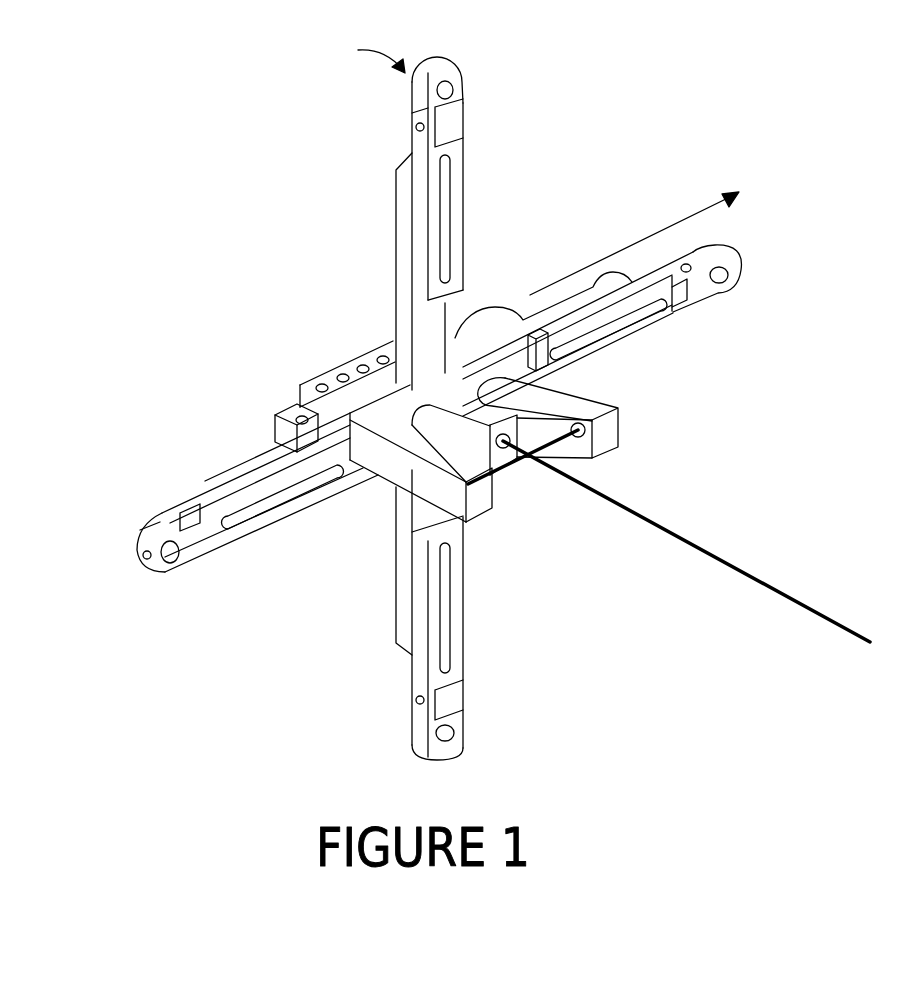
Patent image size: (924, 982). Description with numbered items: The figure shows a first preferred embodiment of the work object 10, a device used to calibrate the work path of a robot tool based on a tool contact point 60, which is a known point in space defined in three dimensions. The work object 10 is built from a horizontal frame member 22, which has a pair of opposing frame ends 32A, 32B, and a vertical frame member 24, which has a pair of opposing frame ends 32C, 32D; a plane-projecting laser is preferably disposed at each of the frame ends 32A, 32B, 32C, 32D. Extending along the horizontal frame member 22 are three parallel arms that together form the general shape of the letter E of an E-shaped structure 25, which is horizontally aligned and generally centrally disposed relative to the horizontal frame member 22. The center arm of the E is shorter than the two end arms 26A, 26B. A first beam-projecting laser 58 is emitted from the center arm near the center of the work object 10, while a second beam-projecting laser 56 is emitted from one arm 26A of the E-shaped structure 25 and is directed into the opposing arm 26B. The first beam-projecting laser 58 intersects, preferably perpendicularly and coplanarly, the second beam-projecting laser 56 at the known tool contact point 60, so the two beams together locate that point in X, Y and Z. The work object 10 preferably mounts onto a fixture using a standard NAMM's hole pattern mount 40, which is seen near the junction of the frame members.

The work object 10 is at (368, 297).
The horizontal frame member 22 is at (643, 328).
The vertical frame member 24 is at (412, 153).
The E-shaped structure 25 is at (625, 426).
The arm 26A is at (412, 468).
The arm 26B is at (583, 395).
The frame end 32A is at (178, 556).
The frame end 32B is at (720, 268).
The frame end 32C is at (455, 84).
The frame end 32D is at (455, 742).
The NAMM's hole pattern mount 40 is at (345, 365).
The second beam-projecting laser 56 is at (503, 482).
The first beam-projecting laser 58 is at (820, 621).
The tool contact point 60 is at (548, 460).